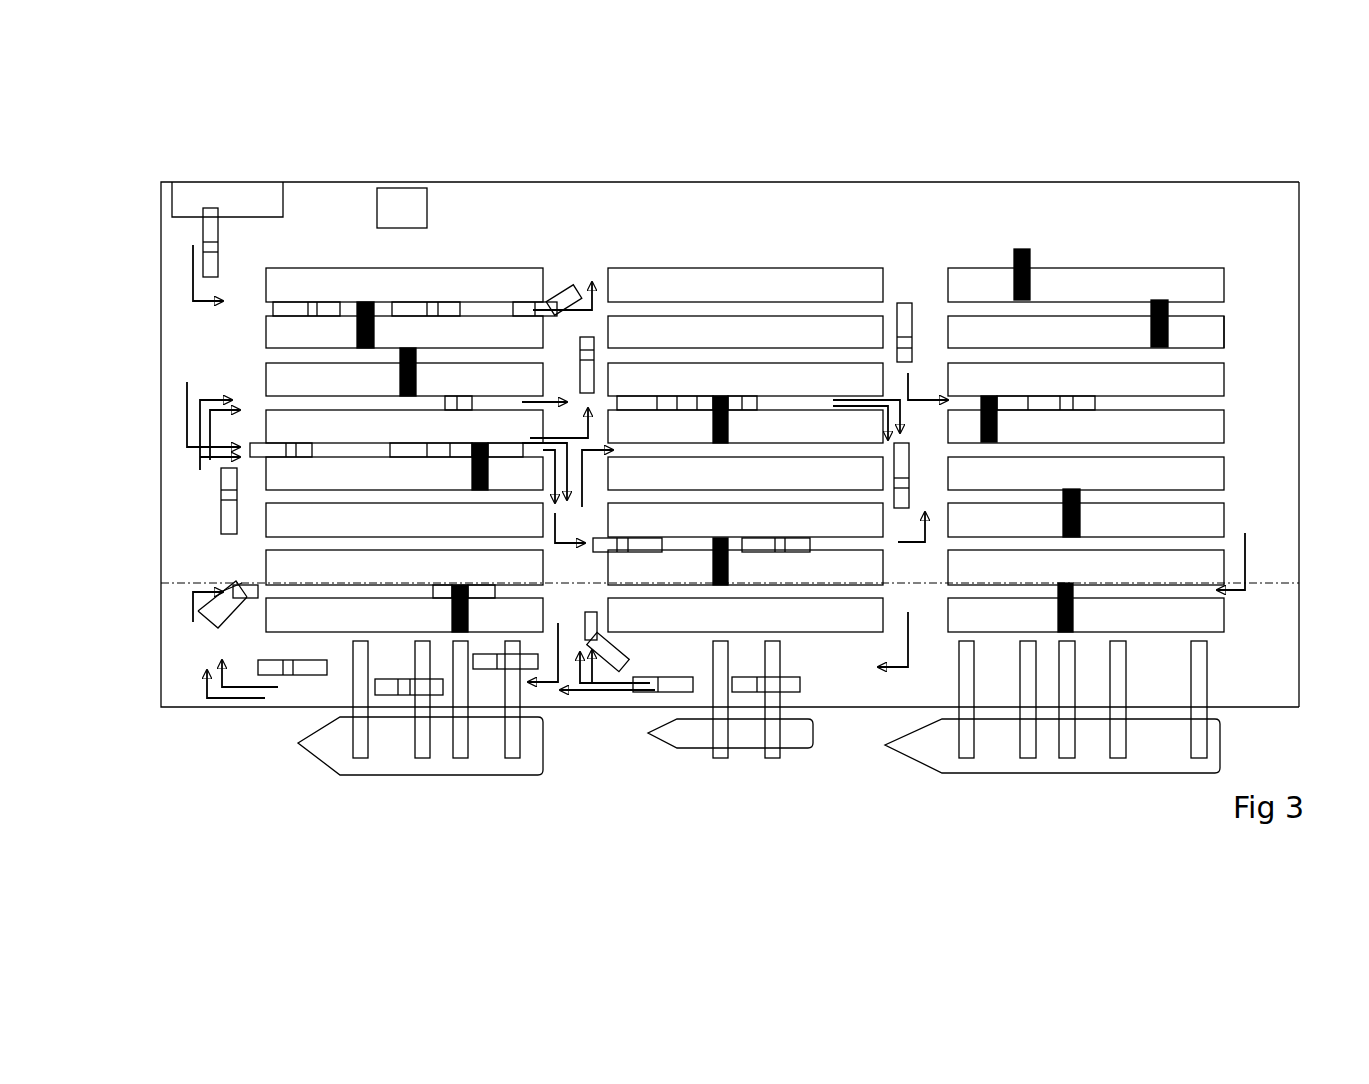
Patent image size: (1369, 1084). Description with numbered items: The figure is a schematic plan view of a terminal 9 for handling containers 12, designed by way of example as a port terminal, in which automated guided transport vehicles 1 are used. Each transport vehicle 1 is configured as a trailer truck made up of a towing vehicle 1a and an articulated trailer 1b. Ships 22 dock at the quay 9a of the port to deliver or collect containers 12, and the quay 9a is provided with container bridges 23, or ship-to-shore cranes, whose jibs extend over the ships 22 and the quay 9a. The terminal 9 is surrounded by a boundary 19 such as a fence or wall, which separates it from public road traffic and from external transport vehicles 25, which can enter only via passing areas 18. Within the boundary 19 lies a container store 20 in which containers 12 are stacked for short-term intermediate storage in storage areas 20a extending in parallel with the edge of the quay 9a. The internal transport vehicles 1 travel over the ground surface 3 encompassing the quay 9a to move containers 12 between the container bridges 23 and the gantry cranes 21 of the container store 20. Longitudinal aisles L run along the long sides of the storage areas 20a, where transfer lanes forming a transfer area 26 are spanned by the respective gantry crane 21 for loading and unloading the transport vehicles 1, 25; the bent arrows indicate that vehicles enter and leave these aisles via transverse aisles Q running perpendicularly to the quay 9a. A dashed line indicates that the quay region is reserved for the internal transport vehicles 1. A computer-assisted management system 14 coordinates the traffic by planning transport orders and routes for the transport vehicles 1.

The transport vehicle 1 is at (496, 462).
The towing vehicle 1a is at (242, 582).
The trailer 1b is at (160, 601).
The ground surface 3 is at (1270, 488).
The terminal 9 is at (133, 447).
The quay 9a is at (930, 690).
The container 12 is at (783, 688).
The management system 14 is at (416, 225).
The passing area 18 is at (242, 201).
The boundary 19 is at (1299, 430).
The container store 20 is at (745, 412).
The storage area 20a is at (755, 282).
The gantry crane 21 is at (355, 343).
The ship 22 is at (322, 757).
The container bridge 23 is at (360, 738).
The external transport vehicle 25 is at (207, 229).
The transfer area 26 is at (388, 305).
The transverse aisle Q is at (565, 263).
The longitudinal aisle L is at (1217, 307).